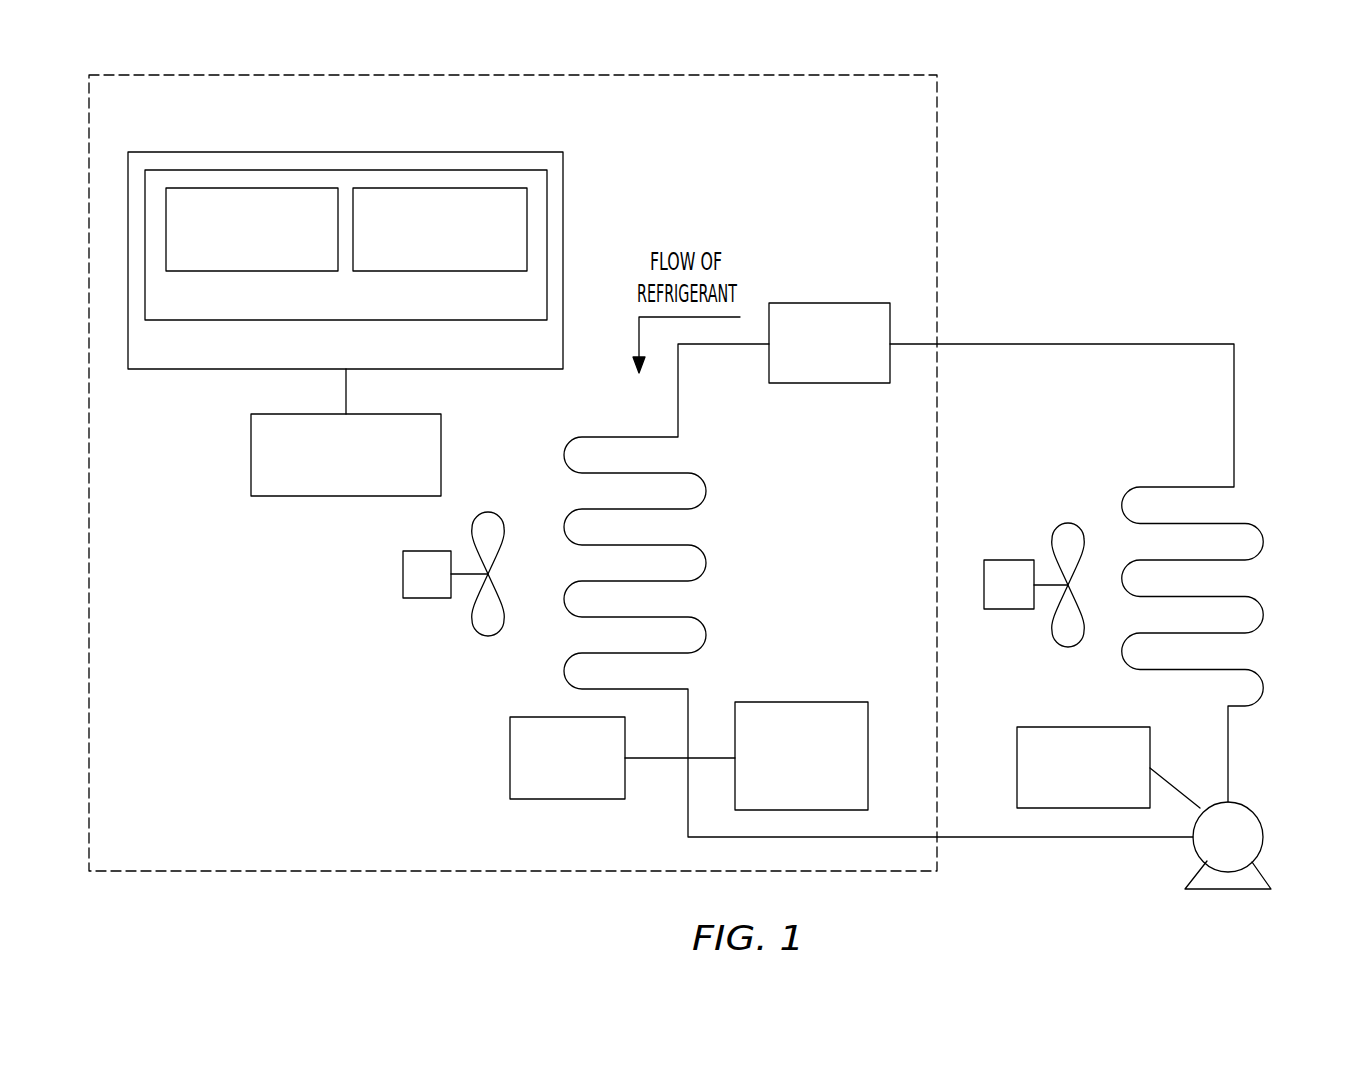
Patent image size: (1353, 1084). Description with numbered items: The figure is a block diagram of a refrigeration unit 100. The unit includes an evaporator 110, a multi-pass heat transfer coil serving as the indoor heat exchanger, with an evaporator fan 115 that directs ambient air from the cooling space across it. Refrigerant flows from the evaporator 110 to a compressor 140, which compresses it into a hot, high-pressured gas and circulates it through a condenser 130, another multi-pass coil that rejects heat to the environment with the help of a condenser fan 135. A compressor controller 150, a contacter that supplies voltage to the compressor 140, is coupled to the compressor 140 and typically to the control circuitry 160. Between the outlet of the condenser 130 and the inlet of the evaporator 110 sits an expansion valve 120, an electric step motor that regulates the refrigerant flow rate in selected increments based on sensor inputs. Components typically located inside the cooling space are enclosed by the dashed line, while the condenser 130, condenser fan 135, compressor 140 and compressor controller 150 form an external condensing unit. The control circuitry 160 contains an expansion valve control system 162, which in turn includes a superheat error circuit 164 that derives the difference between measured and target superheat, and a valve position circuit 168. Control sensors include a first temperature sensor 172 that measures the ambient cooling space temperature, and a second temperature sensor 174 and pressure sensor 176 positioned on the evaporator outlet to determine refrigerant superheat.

The refrigeration unit 100 is at (1152, 165).
The evaporator 110 is at (678, 410).
The evaporator fan 115 is at (403, 576).
The expansion valve 120 is at (866, 303).
The condenser 130 is at (1264, 537).
The condenser fan 135 is at (996, 560).
The compressor 140 is at (1195, 880).
The compressor controller 150 is at (1043, 727).
The control circuitry 160 is at (563, 202).
The expansion valve control system 162 is at (353, 170).
The superheat error circuit 164 is at (283, 188).
The valve position circuit 168 is at (487, 188).
The first temperature sensor 172 is at (251, 448).
The second temperature sensor 174 is at (840, 702).
The pressure sensor 176 is at (510, 750).